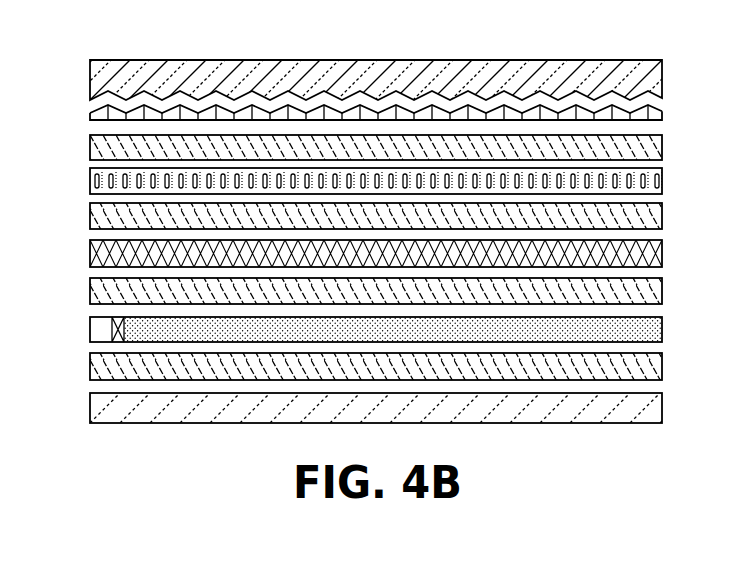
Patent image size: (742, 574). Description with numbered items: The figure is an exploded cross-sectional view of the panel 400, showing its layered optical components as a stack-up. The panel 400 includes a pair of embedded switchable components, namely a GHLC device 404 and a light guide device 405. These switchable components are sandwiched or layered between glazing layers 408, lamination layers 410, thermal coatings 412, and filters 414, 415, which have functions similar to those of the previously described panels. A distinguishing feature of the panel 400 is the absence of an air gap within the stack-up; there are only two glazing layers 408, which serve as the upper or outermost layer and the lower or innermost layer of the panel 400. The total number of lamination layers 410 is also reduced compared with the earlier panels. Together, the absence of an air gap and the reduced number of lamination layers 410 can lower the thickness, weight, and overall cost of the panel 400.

The panel 400 is at (153, 40).
The GHLC device 404 is at (662, 183).
The light guide device 405 is at (378, 335).
The glazing layers 408 is at (662, 70).
The lamination layers 410 is at (662, 148).
The thermal coatings 412 is at (662, 111).
The filter 414 is at (110, 333).
The filter 415 is at (662, 248).